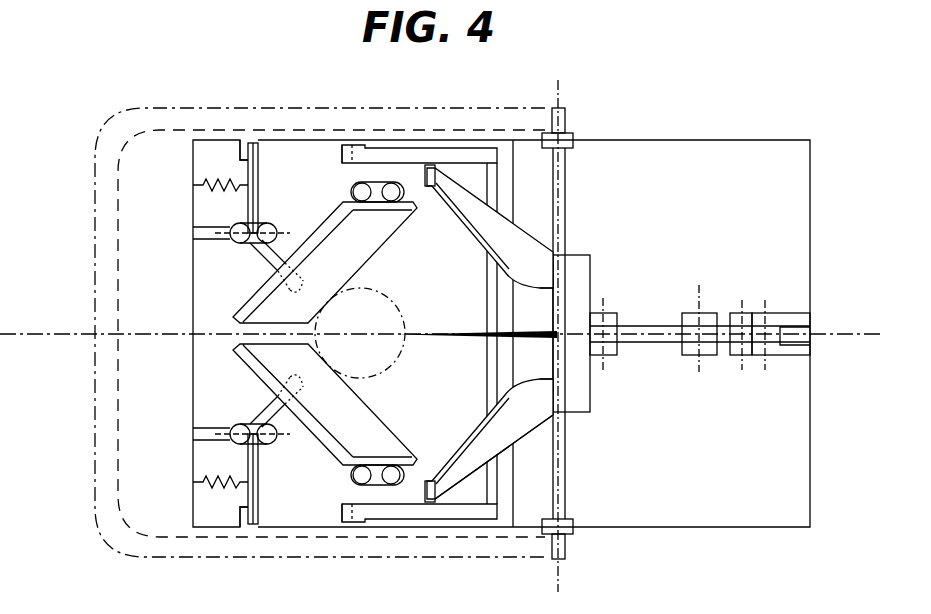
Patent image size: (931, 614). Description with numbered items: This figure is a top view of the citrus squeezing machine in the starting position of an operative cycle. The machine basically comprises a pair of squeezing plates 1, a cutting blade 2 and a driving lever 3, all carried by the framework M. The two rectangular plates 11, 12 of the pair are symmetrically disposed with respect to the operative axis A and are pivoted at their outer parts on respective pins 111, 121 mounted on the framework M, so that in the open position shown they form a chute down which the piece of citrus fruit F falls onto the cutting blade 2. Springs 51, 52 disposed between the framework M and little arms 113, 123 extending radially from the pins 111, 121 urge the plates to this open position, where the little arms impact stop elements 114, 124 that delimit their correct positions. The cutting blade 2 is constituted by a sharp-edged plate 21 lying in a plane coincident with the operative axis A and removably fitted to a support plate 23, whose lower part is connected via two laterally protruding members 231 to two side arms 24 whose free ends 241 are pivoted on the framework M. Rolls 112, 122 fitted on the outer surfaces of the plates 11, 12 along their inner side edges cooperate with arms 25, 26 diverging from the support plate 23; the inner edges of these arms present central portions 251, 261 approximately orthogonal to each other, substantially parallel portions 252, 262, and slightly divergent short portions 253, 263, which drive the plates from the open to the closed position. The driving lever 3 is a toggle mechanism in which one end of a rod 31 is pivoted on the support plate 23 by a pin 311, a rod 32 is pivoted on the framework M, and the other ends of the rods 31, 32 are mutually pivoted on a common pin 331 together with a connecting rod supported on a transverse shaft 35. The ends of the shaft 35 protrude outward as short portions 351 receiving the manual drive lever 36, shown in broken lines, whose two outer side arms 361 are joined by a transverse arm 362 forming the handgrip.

The pair of squeezing plates 1 is at (284, 201).
The squeezing plate 11 is at (360, 240).
The pin 111 is at (253, 228).
The roll 112 is at (437, 172).
The little arm 113 is at (260, 190).
The stop element 114 is at (254, 142).
The squeezing plate 12 is at (375, 433).
The pin 121 is at (262, 445).
The roll 122 is at (440, 486).
The little arm 123 is at (260, 488).
The stop element 124 is at (240, 508).
The cutting blade 2 is at (477, 302).
The plate 21 is at (457, 341).
The support plate 23 is at (572, 392).
The members 231 is at (522, 198).
The side arms 24 is at (420, 147).
The free ends 241 is at (345, 171).
The arm 25 is at (489, 246).
The central portion 251 is at (482, 257).
The parallel portion 252 is at (543, 296).
The short portion 253 is at (430, 192).
The arm 26 is at (489, 480).
The central portion 261 is at (474, 426).
The parallel portion 262 is at (545, 373).
The short portion 263 is at (440, 502).
The driving lever 3 is at (700, 268).
The rod 31 is at (652, 328).
The pin 311 is at (608, 363).
The rod 32 is at (722, 314).
The common pin 331 is at (692, 308).
The transverse shaft 35 is at (567, 233).
The short portions 351 is at (570, 122).
The drive lever 36 is at (92, 464).
The outer side arms 361 is at (236, 108).
The transverse arm 362 is at (118, 250).
The spring 51 is at (222, 186).
The spring 52 is at (224, 492).
The operative axis A is at (46, 334).
The piece of citrus fruit F is at (390, 300).
The framework M is at (700, 527).